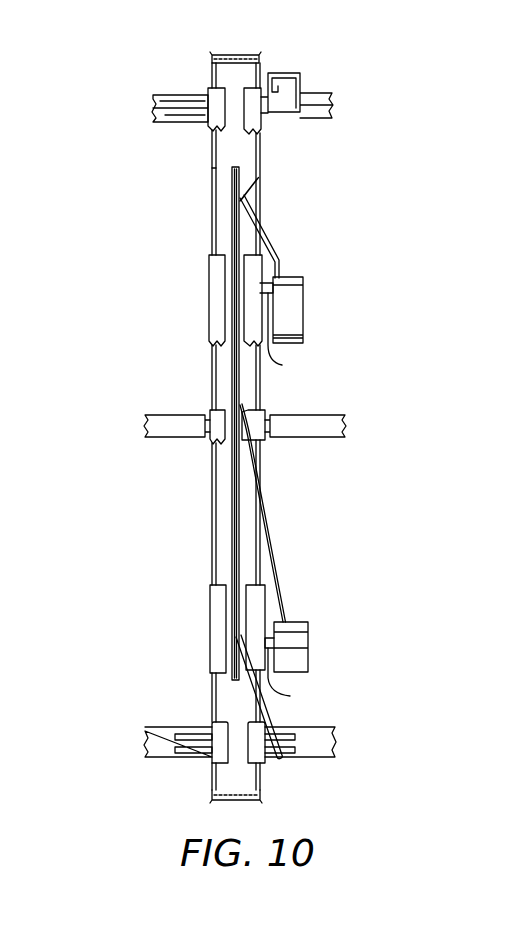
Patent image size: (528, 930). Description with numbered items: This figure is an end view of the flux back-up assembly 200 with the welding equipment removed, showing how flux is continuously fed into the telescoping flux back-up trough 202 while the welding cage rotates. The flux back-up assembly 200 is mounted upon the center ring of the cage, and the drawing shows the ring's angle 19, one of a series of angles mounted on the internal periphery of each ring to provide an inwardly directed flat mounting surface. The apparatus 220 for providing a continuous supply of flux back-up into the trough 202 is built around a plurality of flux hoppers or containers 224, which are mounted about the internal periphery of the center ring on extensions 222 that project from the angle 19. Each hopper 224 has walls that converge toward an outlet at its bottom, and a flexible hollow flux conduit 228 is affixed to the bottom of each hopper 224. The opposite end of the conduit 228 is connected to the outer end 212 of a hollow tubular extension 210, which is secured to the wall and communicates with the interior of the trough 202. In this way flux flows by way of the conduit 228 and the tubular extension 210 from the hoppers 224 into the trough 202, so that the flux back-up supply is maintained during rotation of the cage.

The angle 19 is at (215, 292).
The flux back-up assembly 200 is at (522, 192).
The flux back-up trough 202 is at (233, 172).
The hollow tubular extension 210 is at (258, 172).
The outer end of tubular extension 212 is at (245, 200).
The apparatus for providing a continuous supply of flux 220 is at (527, 380).
The extension 222 is at (282, 365).
The flux hopper 224 is at (310, 320).
The flexible hollow flux conduit 228 is at (262, 232).